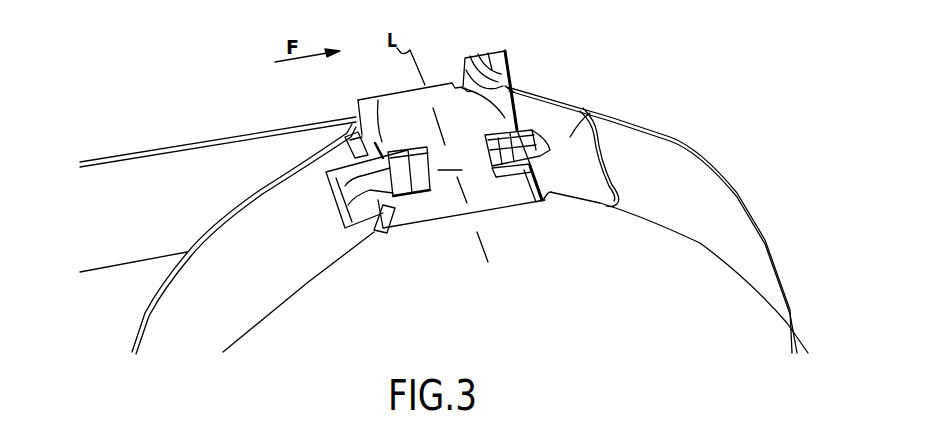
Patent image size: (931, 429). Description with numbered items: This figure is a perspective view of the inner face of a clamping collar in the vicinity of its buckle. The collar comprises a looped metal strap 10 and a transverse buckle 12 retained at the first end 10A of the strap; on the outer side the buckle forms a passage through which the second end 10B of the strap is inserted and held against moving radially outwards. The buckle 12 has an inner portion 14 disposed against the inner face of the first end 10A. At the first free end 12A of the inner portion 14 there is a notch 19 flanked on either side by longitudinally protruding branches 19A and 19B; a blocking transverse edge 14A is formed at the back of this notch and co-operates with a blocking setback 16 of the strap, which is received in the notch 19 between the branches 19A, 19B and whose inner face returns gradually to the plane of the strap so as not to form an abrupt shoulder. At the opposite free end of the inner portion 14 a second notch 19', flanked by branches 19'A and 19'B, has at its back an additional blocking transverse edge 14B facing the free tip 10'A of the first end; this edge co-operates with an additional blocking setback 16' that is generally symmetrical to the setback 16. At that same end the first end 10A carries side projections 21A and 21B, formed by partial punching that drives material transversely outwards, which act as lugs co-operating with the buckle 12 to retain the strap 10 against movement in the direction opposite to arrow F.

The looped metal strap 10 is at (515, 272).
The first end of the strap 10A is at (595, 111).
The second end of the strap 10B is at (213, 157).
The free tip of the first end 10'A is at (621, 157).
The transverse buckle 12 is at (456, 236).
The first free end of the inner portion 12A is at (336, 125).
The inner portion of the buckle 14 is at (460, 185).
The blocking transverse edge 14A is at (420, 137).
The additional blocking transverse edge 14B is at (492, 170).
The blocking setback 16 is at (422, 180).
The additional blocking setback 16' is at (493, 139).
The notch 19 is at (349, 185).
The longitudinally protruding branch 19A is at (378, 145).
The longitudinally protruding branch 19B is at (412, 205).
The notch 19' is at (543, 158).
The longitudinally protruding branch 19'A is at (462, 70).
The longitudinally protruding branch 19'B is at (524, 201).
The side projection 21A is at (510, 88).
The side projection 21B is at (549, 200).